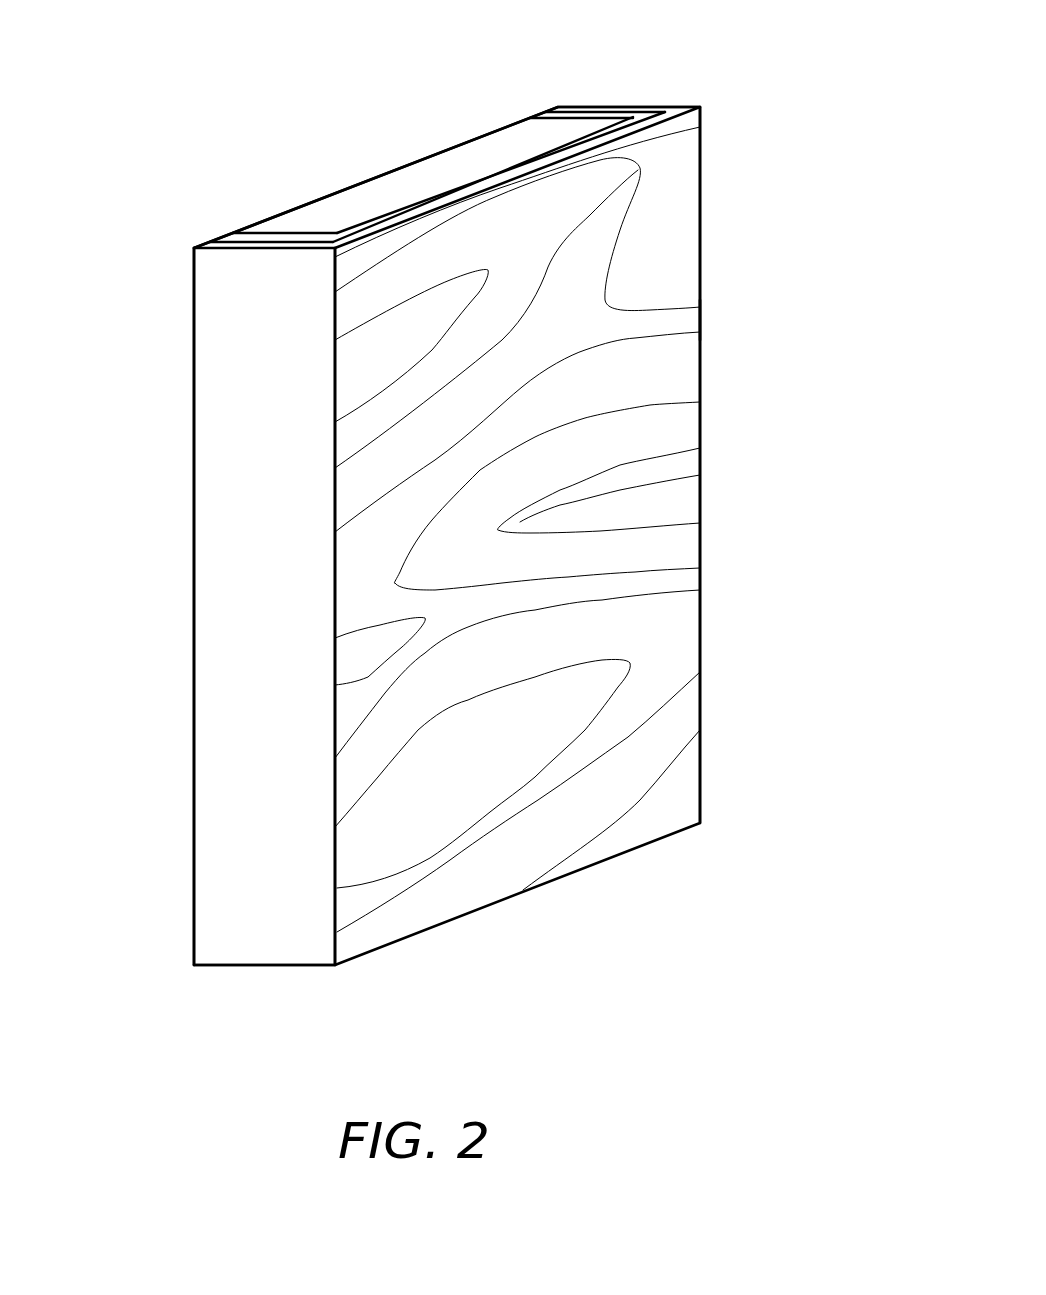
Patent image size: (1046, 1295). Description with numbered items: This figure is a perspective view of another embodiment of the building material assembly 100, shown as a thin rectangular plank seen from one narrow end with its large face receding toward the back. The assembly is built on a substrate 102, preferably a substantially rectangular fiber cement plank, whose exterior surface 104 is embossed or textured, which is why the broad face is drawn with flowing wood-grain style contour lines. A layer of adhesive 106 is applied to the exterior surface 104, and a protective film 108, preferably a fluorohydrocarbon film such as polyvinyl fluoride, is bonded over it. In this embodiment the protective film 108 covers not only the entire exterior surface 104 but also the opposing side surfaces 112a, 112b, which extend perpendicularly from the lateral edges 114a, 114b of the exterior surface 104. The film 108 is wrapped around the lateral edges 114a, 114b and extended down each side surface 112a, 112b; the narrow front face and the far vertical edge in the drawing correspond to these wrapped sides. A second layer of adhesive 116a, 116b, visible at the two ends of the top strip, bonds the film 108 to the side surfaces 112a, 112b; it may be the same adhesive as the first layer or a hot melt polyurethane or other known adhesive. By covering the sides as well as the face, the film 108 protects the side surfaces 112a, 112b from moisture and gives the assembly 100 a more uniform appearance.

The building material assembly 100 is at (266, 66).
The substrate 102 is at (193, 450).
The exterior surface 104 is at (625, 610).
The layer of adhesive 106 is at (448, 195).
The protective film 108 is at (669, 113).
The side surface 112a is at (250, 640).
The side surface 112b is at (702, 318).
The lateral edge 114a is at (334, 372).
The lateral edge 114b is at (702, 193).
The second layer of adhesive 116a is at (269, 236).
The second layer of adhesive 116b is at (583, 117).